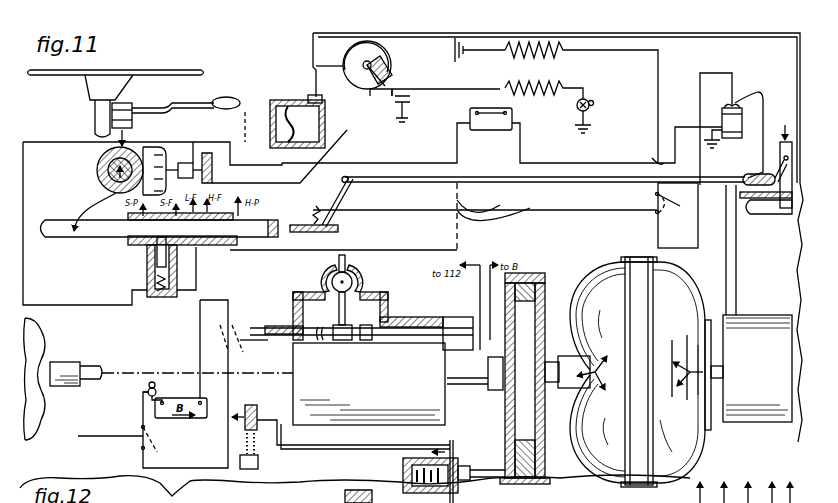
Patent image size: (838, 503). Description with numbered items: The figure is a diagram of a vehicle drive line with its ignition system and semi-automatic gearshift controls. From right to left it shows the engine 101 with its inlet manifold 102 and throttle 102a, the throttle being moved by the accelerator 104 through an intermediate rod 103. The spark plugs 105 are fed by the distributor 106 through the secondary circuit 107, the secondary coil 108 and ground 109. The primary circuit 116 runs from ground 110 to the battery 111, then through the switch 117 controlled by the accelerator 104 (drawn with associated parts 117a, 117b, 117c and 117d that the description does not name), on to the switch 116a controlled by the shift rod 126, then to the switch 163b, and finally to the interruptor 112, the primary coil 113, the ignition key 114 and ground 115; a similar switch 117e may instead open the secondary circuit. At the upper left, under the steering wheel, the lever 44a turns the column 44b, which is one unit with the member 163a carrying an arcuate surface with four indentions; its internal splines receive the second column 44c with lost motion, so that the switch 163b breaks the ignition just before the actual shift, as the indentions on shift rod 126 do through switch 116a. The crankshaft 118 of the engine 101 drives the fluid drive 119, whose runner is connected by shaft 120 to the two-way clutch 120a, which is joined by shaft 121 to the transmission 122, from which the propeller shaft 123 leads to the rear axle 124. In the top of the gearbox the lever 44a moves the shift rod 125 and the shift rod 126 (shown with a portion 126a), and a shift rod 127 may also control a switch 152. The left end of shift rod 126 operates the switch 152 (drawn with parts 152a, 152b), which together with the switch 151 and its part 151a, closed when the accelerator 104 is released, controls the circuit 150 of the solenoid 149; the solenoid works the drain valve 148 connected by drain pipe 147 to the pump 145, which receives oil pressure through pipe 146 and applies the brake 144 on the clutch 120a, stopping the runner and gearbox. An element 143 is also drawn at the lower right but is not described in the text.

The gearshift lever 44a is at (226, 97).
The column 44b is at (100, 131).
The column 44c is at (99, 170).
The engine 101 is at (779, 312).
The inlet manifold 102 is at (762, 216).
The throttle 102a is at (776, 140).
The intermediate rod 103 is at (350, 193).
The accelerator 104 is at (325, 197).
The spark plugs 105 is at (758, 170).
The distributor 106 is at (737, 104).
The secondary circuit 107 is at (682, 248).
The secondary coil 108 is at (566, 53).
The ground 109 is at (465, 54).
The ground 110 is at (710, 152).
The battery 111 is at (482, 131).
The interruptor 112 is at (363, 88).
The primary coil 113 is at (528, 93).
The ignition key 114 is at (594, 104).
The ground 115 is at (589, 128).
The primary circuit 116 is at (30, 180).
The switch 116a is at (147, 276).
The switch 117 is at (420, 206).
The valve port 117a is at (140, 229).
The valve port 117b is at (238, 228).
The contact 117c is at (488, 199).
The contact 117d is at (513, 204).
The switch 117e is at (656, 196).
The crankshaft 118 is at (724, 370).
The fluid drive 119 is at (672, 276).
The shaft 120 is at (547, 375).
The two-way clutch 120a is at (535, 487).
The shaft 121 is at (465, 380).
The transmission 122 is at (338, 494).
The propeller shaft 123 is at (268, 342).
The rear axle 124 is at (38, 348).
The shift rod 125 is at (348, 327).
The shift rod 126 is at (74, 238).
The shaft portion 126a is at (365, 345).
The shift rod 127 is at (314, 328).
The indicator 143 is at (747, 484).
The brake 144 is at (545, 490).
The pump 145 is at (402, 472).
The pipe 146 is at (458, 500).
The drain pipe 147 is at (454, 448).
The drain valve 148 is at (258, 411).
The solenoid 149 is at (259, 463).
The circuit 150 is at (230, 306).
The switch 151 is at (140, 440).
The switch contact 151a is at (350, 195).
The switch 152 is at (236, 337).
The contact 152a is at (220, 342).
The contact 152b is at (238, 351).
The member 163a is at (162, 150).
The switch 163b is at (214, 172).